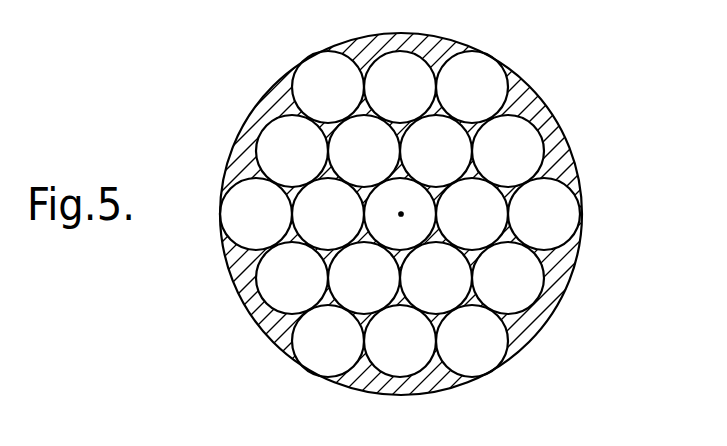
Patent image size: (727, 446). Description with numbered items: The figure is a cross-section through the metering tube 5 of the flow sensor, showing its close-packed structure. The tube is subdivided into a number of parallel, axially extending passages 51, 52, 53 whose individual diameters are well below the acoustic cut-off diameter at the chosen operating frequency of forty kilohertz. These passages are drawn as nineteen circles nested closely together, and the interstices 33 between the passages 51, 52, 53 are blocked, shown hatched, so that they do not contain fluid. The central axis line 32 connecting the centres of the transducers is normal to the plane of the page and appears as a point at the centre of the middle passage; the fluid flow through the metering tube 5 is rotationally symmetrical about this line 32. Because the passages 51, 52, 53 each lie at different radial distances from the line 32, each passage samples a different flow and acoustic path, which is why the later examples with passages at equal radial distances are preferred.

The metering tube 5 is at (561, 135).
The interstices 33 is at (375, 72).
The central axis line 32 is at (402, 214).
The passage 51 is at (417, 225).
The passage 52 is at (483, 222).
The passage 53 is at (555, 220).